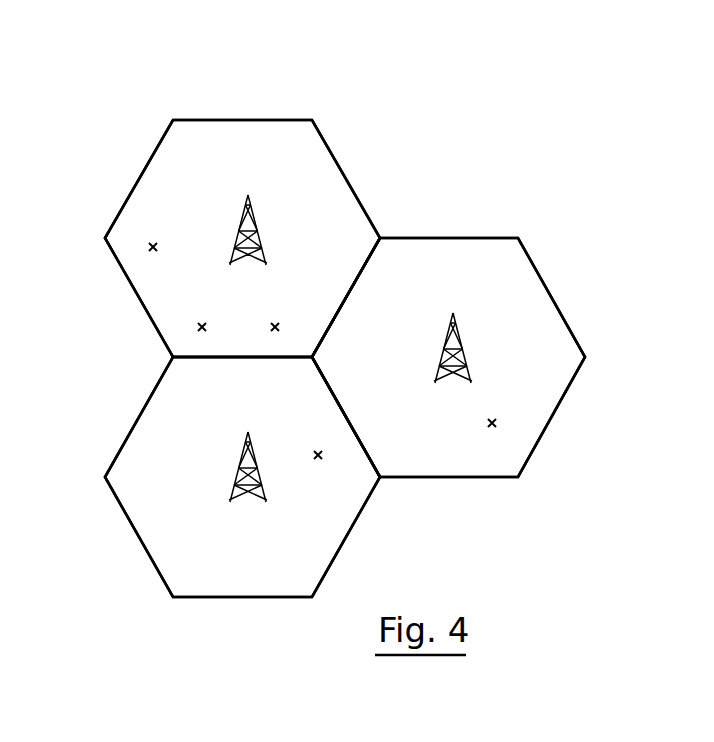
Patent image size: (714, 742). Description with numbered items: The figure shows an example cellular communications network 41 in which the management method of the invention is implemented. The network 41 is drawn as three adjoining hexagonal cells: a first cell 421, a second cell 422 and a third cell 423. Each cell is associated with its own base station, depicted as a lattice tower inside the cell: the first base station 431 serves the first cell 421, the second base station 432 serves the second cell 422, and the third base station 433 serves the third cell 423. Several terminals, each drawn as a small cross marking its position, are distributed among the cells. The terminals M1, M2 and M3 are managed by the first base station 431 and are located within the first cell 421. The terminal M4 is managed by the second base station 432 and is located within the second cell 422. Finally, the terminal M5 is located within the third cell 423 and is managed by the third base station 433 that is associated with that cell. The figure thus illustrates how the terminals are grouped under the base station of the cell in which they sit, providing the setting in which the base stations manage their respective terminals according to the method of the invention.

The cellular communications network 41 is at (407, 173).
The first cell 421 is at (167, 172).
The second cell 422 is at (153, 443).
The third cell 423 is at (502, 290).
The first base station 431 is at (248, 197).
The second base station 432 is at (248, 432).
The third base station 433 is at (453, 313).
The terminal M1 is at (154, 230).
The terminal M2 is at (287, 311).
The terminal M3 is at (199, 311).
The terminal M4 is at (323, 477).
The terminal M5 is at (493, 441).